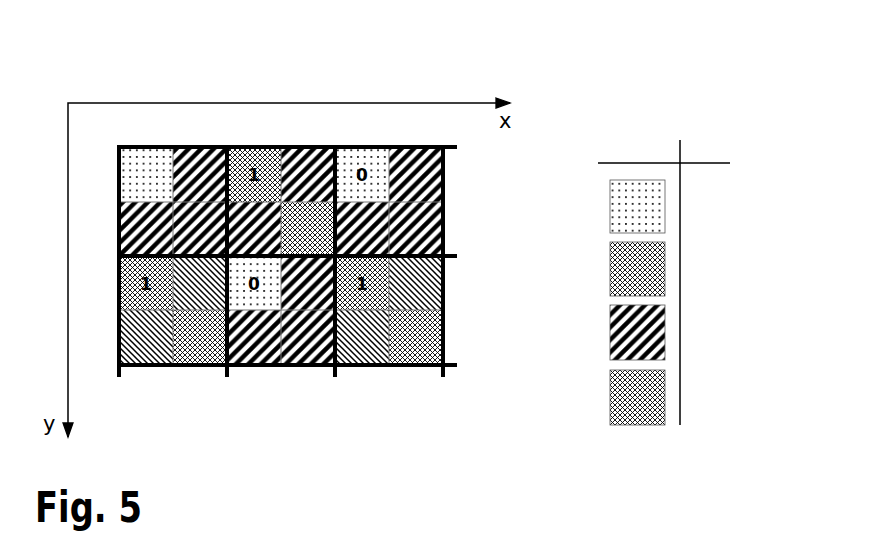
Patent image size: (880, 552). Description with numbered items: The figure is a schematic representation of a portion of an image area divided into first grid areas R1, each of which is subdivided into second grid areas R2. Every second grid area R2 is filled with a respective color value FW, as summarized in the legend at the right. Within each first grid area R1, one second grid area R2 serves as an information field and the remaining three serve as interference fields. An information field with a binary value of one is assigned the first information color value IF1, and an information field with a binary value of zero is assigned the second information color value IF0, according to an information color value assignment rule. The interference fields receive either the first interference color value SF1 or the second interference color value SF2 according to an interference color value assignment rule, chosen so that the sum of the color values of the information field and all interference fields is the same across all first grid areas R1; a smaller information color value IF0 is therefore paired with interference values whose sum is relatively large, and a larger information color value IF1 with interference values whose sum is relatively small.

The first grid area R1 is at (189, 131).
The second grid area R2 is at (133, 158).
The color value FW is at (665, 277).
The second information color value IF0 is at (671, 206).
The first information color value IF1 is at (671, 269).
The first interference color value SF1 is at (675, 332).
The second interference color value SF2 is at (675, 397).